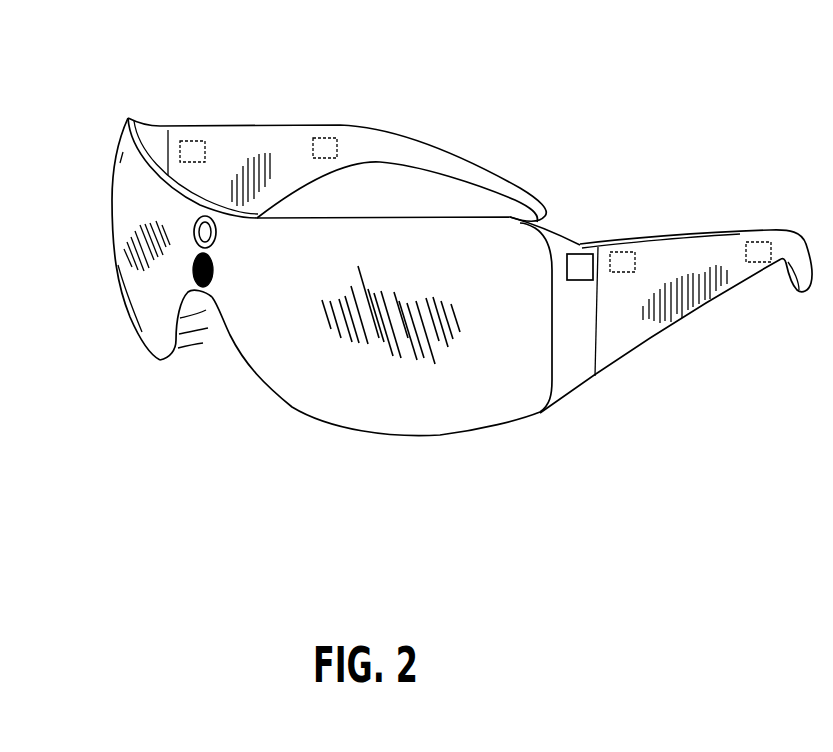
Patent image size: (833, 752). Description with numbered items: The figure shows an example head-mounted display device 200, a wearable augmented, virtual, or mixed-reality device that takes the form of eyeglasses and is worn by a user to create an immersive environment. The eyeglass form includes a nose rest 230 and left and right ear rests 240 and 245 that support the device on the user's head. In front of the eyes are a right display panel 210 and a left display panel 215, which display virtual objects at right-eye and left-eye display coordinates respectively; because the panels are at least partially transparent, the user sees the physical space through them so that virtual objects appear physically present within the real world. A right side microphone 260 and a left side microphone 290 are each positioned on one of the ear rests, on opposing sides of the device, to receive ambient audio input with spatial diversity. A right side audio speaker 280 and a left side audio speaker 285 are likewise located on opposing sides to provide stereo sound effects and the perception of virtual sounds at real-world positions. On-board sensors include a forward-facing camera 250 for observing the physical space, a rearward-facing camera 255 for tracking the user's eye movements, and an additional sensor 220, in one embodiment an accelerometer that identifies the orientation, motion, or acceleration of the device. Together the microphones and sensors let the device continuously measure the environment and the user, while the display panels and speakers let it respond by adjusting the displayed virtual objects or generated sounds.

The head-mounted display device 200 is at (530, 42).
The right display panel 210 is at (134, 281).
The left display panel 215 is at (338, 396).
The additional sensor 220 is at (578, 245).
The nose rest 230 is at (204, 336).
The left ear rest 240 is at (453, 180).
The right ear rest 245 is at (789, 278).
The forward-facing camera 250 is at (217, 235).
The rearward-facing camera 255 is at (217, 275).
The right side microphone 260 is at (197, 137).
The right side audio speaker 280 is at (323, 137).
The left side audio speaker 285 is at (765, 242).
The left side microphone 290 is at (623, 252).